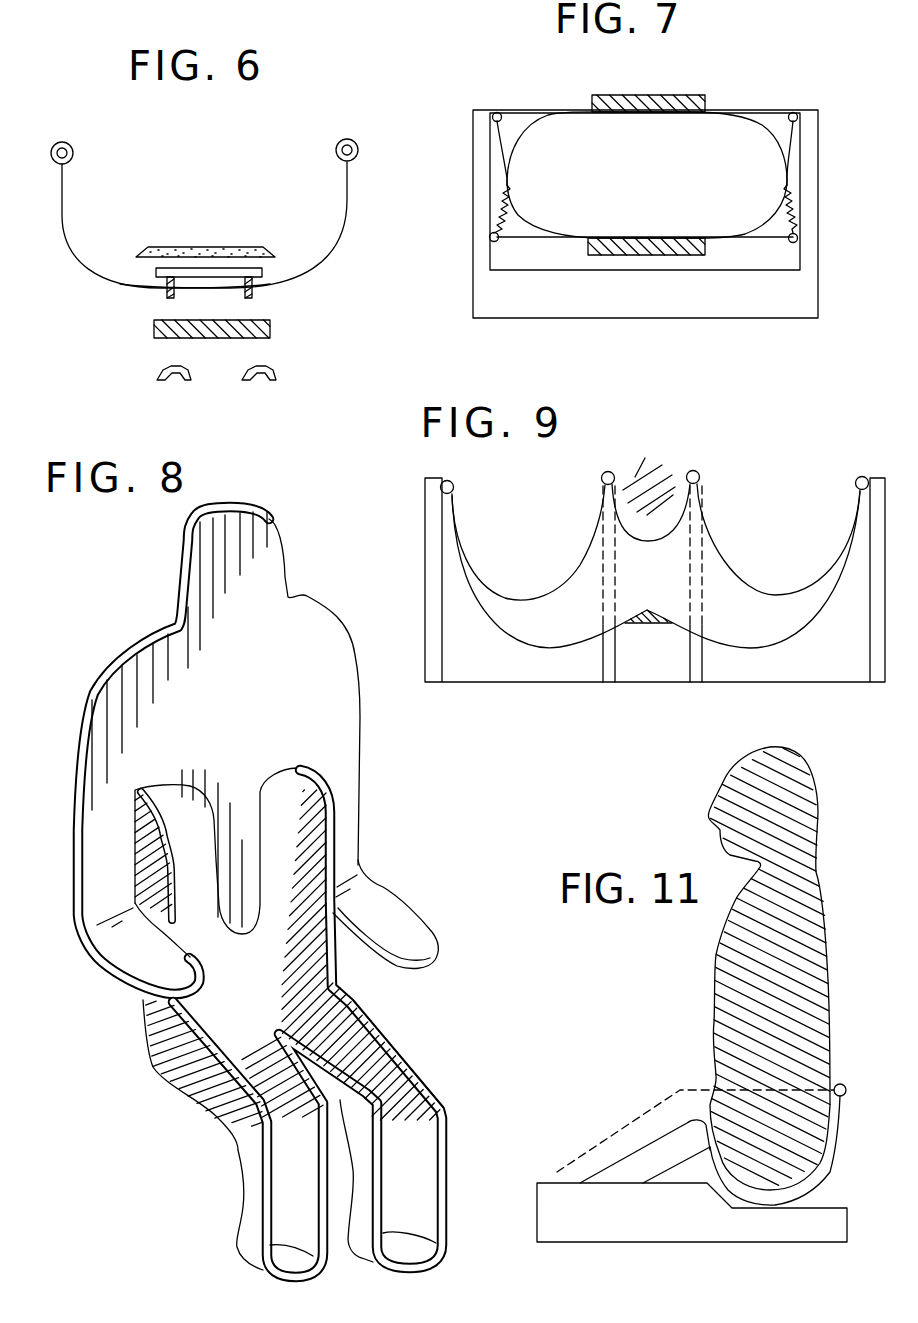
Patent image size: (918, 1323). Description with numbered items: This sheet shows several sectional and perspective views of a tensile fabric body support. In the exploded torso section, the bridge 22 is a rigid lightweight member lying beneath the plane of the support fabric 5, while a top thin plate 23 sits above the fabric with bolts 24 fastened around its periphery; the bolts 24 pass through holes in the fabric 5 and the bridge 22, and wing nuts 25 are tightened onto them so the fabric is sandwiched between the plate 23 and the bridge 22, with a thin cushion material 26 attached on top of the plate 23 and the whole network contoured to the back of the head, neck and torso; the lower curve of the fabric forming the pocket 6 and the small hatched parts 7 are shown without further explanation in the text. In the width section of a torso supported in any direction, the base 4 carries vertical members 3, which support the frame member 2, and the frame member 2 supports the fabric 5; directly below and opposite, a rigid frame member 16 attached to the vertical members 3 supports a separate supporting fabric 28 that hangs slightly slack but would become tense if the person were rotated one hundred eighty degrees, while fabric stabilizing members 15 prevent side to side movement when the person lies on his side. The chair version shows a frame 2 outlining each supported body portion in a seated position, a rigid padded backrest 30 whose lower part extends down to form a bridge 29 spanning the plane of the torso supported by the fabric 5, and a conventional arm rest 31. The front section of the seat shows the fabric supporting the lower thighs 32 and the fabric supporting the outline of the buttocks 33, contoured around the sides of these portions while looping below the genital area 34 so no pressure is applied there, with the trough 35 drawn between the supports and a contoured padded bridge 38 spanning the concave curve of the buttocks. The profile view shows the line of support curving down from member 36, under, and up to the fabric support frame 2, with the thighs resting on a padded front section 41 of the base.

In FIG. 6, the frame member 2 is at (338, 146).
In FIG. 7, the frame member 2 is at (496, 112).
In FIG. 9, the frame member 2 is at (453, 484).
In FIG. 8, the frame member 2 is at (394, 1043).
In FIG. 11, the frame member 2 is at (845, 1085).
In FIG. 7, the vertical members 3 is at (477, 175).
In FIG. 9, the vertical members 3 is at (430, 555).
In FIG. 7, the base 4 is at (786, 268).
In FIG. 6, the support fabric 5 is at (346, 203).
In FIG. 7, the support fabric 5 is at (500, 142).
In FIG. 8, the support fabric 5 is at (252, 1165).
In FIG. 6, the sling pocket 6 is at (293, 282).
In FIG. 7, the clamp block 7 is at (631, 95).
In FIG. 7, the fabric stabilizing members 15 is at (543, 110).
In FIG. 7, the rigid frame member 16 is at (490, 239).
In FIG. 6, the bridge 22 is at (273, 325).
In FIG. 6, the top thin plate 23 is at (155, 270).
In FIG. 6, the bolts 24 is at (166, 293).
In FIG. 6, the wing nuts 25 is at (277, 373).
In FIG. 6, the cushion material 26 is at (231, 246).
In FIG. 7, the separate supporting fabric 28 is at (497, 215).
In FIG. 8, the bridge 29 is at (250, 800).
In FIG. 8, the backrest 30 is at (332, 692).
In FIG. 8, the arm rest 31 is at (414, 936).
In FIG. 9, the lower thigh supporting fabric 32 is at (534, 598).
In FIG. 9, the buttocks supporting fabric 33 is at (527, 647).
In FIG. 9, the genital area 34 is at (650, 457).
In FIG. 11, the genital area 34 is at (701, 1087).
In FIG. 9, the trough 35 is at (647, 542).
In FIG. 11, the member 36 is at (672, 1146).
In FIG. 9, the contoured padded bridge 38 is at (645, 625).
In FIG. 11, the padded front section 41 is at (553, 1181).